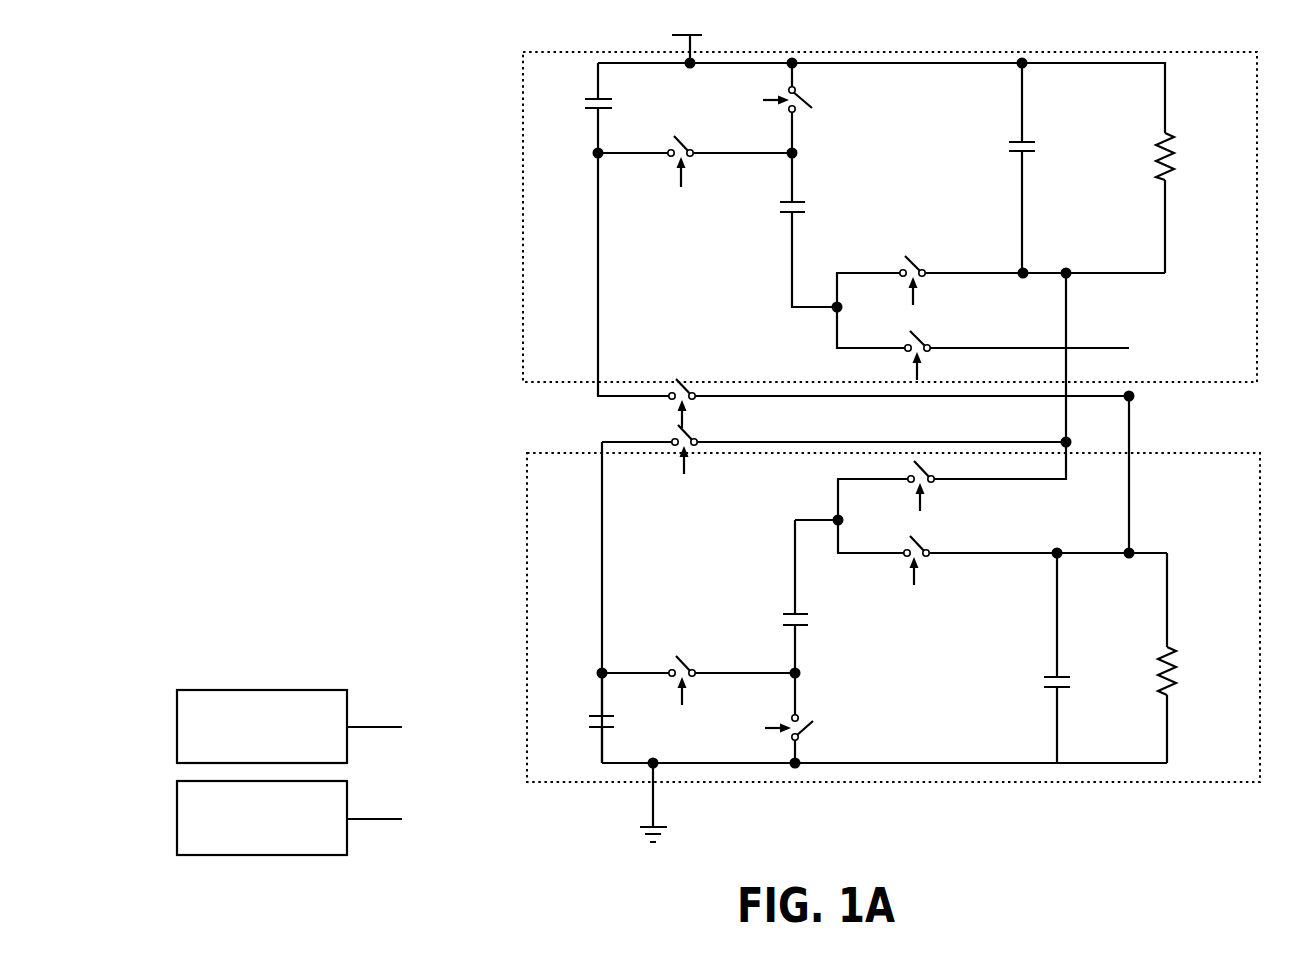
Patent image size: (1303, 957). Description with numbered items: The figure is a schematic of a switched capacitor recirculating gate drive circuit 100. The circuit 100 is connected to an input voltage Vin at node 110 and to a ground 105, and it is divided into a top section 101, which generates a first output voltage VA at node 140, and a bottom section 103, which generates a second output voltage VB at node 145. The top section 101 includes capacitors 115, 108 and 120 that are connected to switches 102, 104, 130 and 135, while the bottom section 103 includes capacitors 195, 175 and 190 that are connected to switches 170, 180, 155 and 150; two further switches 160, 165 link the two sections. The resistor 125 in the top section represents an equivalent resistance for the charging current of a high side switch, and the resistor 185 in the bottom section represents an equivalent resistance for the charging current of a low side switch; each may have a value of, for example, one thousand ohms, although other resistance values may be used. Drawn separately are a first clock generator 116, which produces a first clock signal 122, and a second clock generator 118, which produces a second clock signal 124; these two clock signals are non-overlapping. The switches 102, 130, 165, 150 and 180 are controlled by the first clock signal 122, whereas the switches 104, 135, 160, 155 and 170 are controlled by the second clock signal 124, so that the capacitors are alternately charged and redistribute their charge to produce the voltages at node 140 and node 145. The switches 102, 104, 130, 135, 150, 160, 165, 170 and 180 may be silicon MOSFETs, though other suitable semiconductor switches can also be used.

The circuit 100 is at (440, 62).
The top section 101 is at (1106, 52).
The switch 102 is at (680, 140).
The bottom section 103 is at (1245, 452).
The switch 104 is at (804, 102).
The ground 105 is at (650, 826).
The capacitor 108 is at (801, 201).
The node 110 is at (690, 33).
The capacitor 115 is at (590, 98).
The first clock generator 116 is at (221, 690).
The second clock generator 118 is at (221, 855).
The capacitor 120 is at (1031, 142).
The first clock signal 122 is at (387, 703).
The second clock signal 124 is at (387, 794).
The resistor 125 is at (1178, 146).
The switch 130 is at (914, 262).
The switch 135 is at (924, 340).
The node 140 is at (1168, 263).
The node 145 is at (1168, 573).
The switch 150 is at (931, 477).
The switch 155 is at (927, 551).
The switch 160 is at (680, 384).
The switch 165 is at (678, 434).
The switch 170 is at (682, 660).
The capacitor 175 is at (802, 613).
The switch 180 is at (812, 730).
The resistor 185 is at (1180, 671).
The capacitor 190 is at (1048, 675).
The capacitor 195 is at (596, 712).